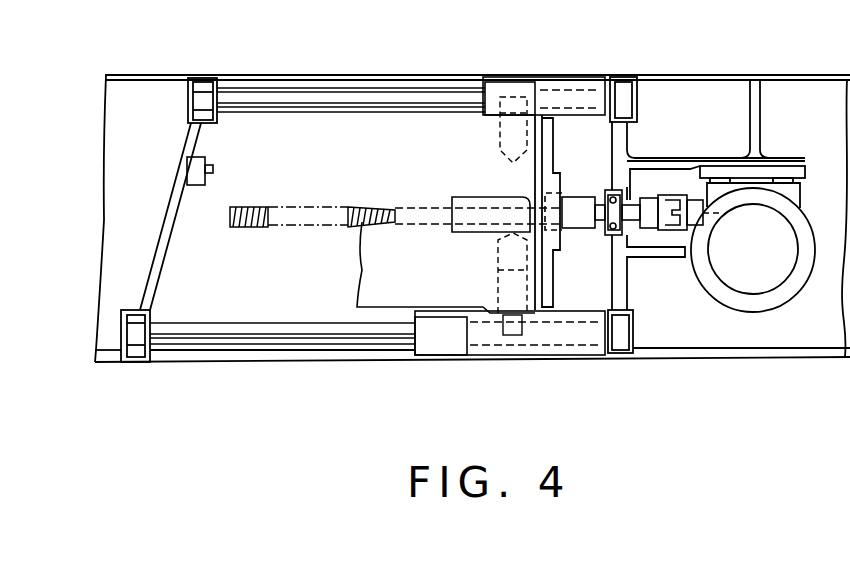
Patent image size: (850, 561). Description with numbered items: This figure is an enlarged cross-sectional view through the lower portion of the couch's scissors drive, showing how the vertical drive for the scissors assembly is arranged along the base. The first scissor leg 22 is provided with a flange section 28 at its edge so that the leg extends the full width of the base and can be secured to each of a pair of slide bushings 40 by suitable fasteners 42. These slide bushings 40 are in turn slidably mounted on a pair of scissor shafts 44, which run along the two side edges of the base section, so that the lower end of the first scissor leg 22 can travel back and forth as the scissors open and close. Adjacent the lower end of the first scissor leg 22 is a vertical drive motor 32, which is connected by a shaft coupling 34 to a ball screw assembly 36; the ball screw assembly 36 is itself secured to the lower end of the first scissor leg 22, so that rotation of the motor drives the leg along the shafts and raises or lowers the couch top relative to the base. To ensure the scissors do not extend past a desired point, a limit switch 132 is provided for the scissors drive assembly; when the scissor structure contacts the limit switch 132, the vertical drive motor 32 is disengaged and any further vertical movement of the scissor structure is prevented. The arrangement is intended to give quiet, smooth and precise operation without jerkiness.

The first scissor leg 22 is at (383, 242).
The flange section 28 is at (484, 120).
The vertical drive motor 32 is at (743, 253).
The shaft coupling 34 is at (670, 200).
The ball screw assembly 36 is at (573, 208).
The slide bushing 40 is at (565, 78).
The fastener 42 is at (510, 133).
The scissor shaft 44 is at (302, 78).
The limit switch 132 is at (195, 175).